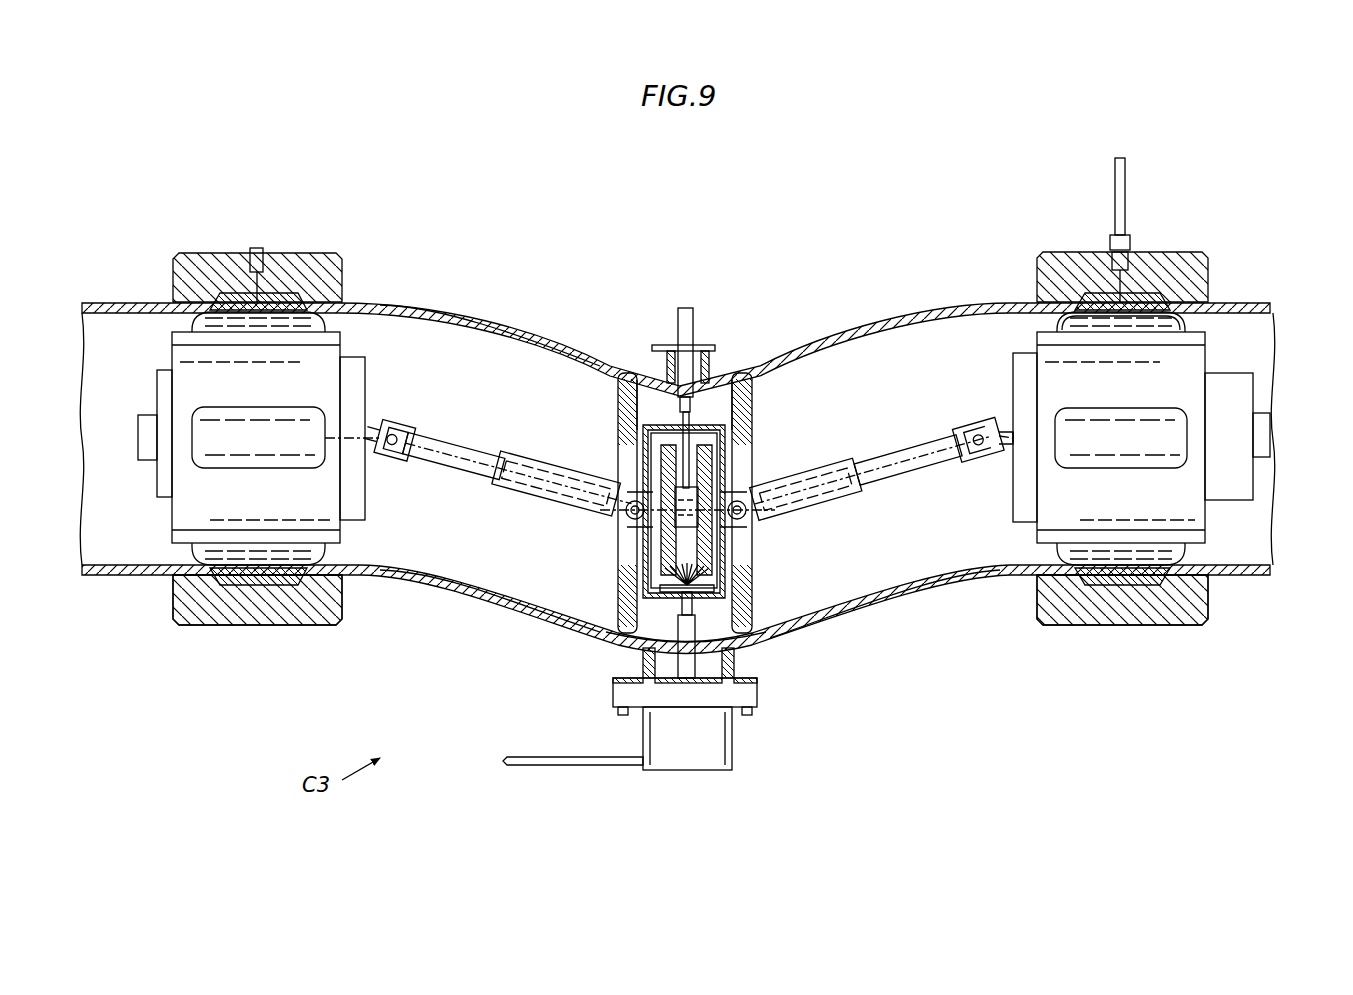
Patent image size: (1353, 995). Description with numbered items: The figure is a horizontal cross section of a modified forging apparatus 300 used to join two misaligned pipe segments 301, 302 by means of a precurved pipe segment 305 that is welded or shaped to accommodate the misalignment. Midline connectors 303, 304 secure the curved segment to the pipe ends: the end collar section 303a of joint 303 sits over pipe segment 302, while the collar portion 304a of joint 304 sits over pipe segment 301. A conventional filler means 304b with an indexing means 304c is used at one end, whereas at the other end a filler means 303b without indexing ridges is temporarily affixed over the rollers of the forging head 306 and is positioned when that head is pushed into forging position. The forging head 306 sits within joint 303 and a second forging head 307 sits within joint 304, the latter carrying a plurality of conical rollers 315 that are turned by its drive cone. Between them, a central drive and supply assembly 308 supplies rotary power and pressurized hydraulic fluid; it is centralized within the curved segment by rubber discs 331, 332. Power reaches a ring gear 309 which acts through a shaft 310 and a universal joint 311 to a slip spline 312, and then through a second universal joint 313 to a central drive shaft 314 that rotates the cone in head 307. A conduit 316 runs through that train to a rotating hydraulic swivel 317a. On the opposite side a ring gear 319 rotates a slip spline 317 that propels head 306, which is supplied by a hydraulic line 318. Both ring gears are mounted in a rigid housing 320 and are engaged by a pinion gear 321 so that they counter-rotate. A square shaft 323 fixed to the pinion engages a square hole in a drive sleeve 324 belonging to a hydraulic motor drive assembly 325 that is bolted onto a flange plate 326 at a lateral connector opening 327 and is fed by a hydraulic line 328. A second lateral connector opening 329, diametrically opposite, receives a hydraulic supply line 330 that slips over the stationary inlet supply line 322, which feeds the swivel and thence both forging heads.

The forging apparatus 300 is at (100, 470).
The pipe segment 301 is at (1260, 578).
The pipe segment 302 is at (108, 302).
The midline connector 303 is at (267, 634).
The end collar section 303a is at (205, 626).
The filler means 303b is at (205, 257).
The midline connector 304 is at (1085, 627).
The collar portion 304a is at (1185, 627).
The filler means 304b is at (1100, 300).
The indexing means 304c is at (1130, 300).
The precurved pipe segment 305 is at (500, 330).
The forging head 306 is at (273, 515).
The forging head 307 is at (1137, 387).
The central drive and supply assembly 308 is at (603, 445).
The ring gear 309 is at (735, 470).
The shaft 310 is at (722, 470).
The universal joint 311 is at (760, 532).
The slip spline 312 is at (820, 520).
The universal joint 313 is at (990, 468).
The central drive shaft 314 is at (1005, 428).
The conical rollers 315 is at (1160, 330).
The conduit 316 is at (905, 458).
The slip spline 317 is at (520, 490).
The rotating hydraulic swivel 317a is at (625, 535).
The hydraulic line 318 is at (525, 462).
The ring gear 319 is at (625, 600).
The rigid housing 320 is at (722, 415).
The pinion gear 321 is at (625, 625).
The inlet supply line 322 is at (628, 418).
The square shaft 323 is at (790, 625).
The drive sleeve 324 is at (690, 680).
The hydraulic motor drive assembly 325 is at (702, 762).
The flange plate 326 is at (770, 685).
The lateral connector opening 327 is at (740, 653).
The hydraulic line 328 is at (582, 768).
The second lateral connector opening 329 is at (712, 352).
The hydraulic supply line 330 is at (692, 325).
The rubber disc 331 is at (615, 380).
The rubber disc 332 is at (748, 400).